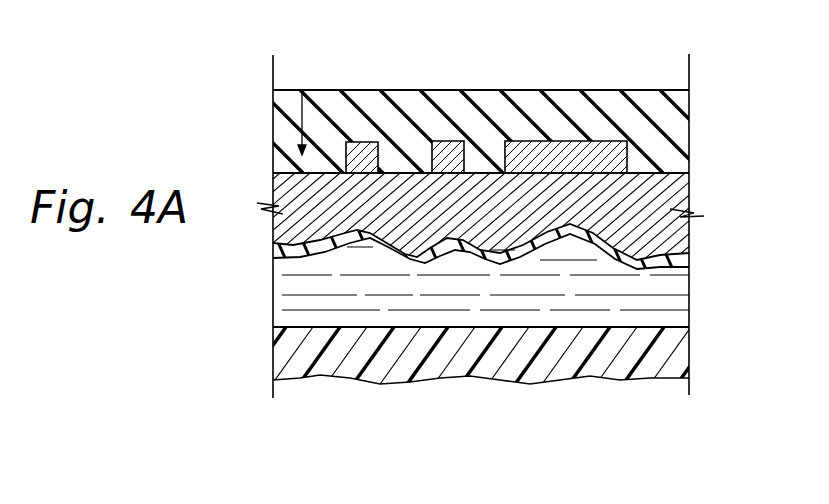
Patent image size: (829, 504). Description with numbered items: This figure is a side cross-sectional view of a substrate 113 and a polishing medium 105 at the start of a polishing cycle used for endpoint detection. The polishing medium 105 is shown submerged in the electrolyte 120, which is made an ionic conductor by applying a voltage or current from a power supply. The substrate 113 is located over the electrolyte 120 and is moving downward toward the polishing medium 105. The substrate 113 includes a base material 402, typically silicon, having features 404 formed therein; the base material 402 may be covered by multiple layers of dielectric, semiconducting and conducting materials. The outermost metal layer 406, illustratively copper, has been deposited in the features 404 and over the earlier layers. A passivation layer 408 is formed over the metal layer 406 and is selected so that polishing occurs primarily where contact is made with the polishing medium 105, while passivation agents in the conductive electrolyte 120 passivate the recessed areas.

The substrate 113 is at (650, 35).
The base material 402 is at (689, 115).
The features 404 is at (372, 140).
The metal layer 406 is at (689, 186).
The passivation layer 408 is at (692, 258).
The electrolyte 120 is at (689, 298).
The polishing medium 105 is at (689, 345).